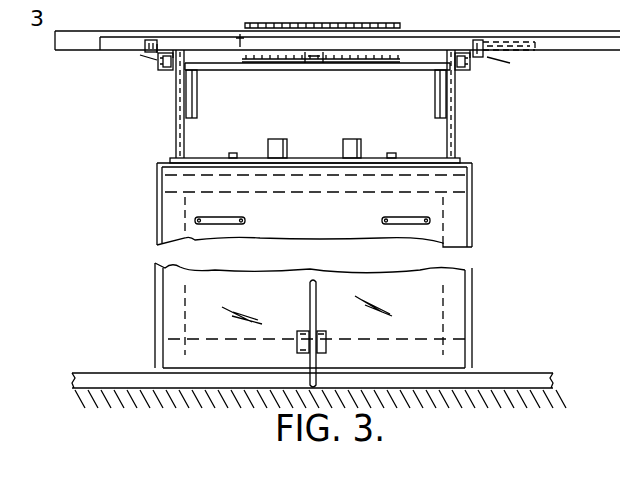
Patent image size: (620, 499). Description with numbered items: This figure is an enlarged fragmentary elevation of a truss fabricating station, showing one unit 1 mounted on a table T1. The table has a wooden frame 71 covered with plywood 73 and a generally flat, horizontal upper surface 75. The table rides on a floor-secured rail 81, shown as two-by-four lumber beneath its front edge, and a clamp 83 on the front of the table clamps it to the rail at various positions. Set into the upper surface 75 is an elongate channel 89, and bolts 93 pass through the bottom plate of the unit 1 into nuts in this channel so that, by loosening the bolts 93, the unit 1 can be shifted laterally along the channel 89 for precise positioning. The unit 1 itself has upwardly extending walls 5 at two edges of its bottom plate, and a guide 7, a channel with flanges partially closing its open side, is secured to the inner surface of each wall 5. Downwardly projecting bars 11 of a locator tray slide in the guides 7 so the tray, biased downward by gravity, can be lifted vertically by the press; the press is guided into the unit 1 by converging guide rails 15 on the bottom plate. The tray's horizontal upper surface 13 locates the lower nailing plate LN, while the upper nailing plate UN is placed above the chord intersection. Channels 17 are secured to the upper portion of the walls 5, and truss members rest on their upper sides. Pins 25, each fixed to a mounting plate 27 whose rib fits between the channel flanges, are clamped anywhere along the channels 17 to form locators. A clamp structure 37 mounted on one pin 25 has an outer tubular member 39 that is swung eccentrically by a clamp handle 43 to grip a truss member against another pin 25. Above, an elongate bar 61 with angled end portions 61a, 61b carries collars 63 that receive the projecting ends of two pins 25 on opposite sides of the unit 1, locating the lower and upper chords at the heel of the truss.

The unit 1 is at (108, 121).
The walls 5 is at (176, 137).
The guide 7 is at (192, 130).
The bars 11 is at (197, 98).
The upper surface 13 is at (225, 70).
The guide rails 15 is at (343, 142).
The channels 17 is at (178, 46).
The pins 25 is at (157, 62).
The mounting plate 27 is at (160, 71).
The clamp structure 37 is at (462, 24).
The outer tubular member 39 is at (490, 37).
The clamp handle 43 is at (539, 55).
The elongate bar 61 is at (308, 63).
The end portion 61a is at (415, 43).
The end portion 61b is at (218, 43).
The sleeves or collars 63 is at (150, 41).
The wooden frame 71 is at (185, 303).
The plywood 73 is at (157, 226).
The upper surface 75 is at (466, 170).
The front rail 81 is at (521, 355).
The clamp 83 is at (320, 332).
The channel 89 is at (465, 178).
The bolts 93 is at (243, 155).
The upper nailing plate UN is at (338, 23).
The lower nailing plate LN is at (323, 63).
The table T1 is at (110, 283).